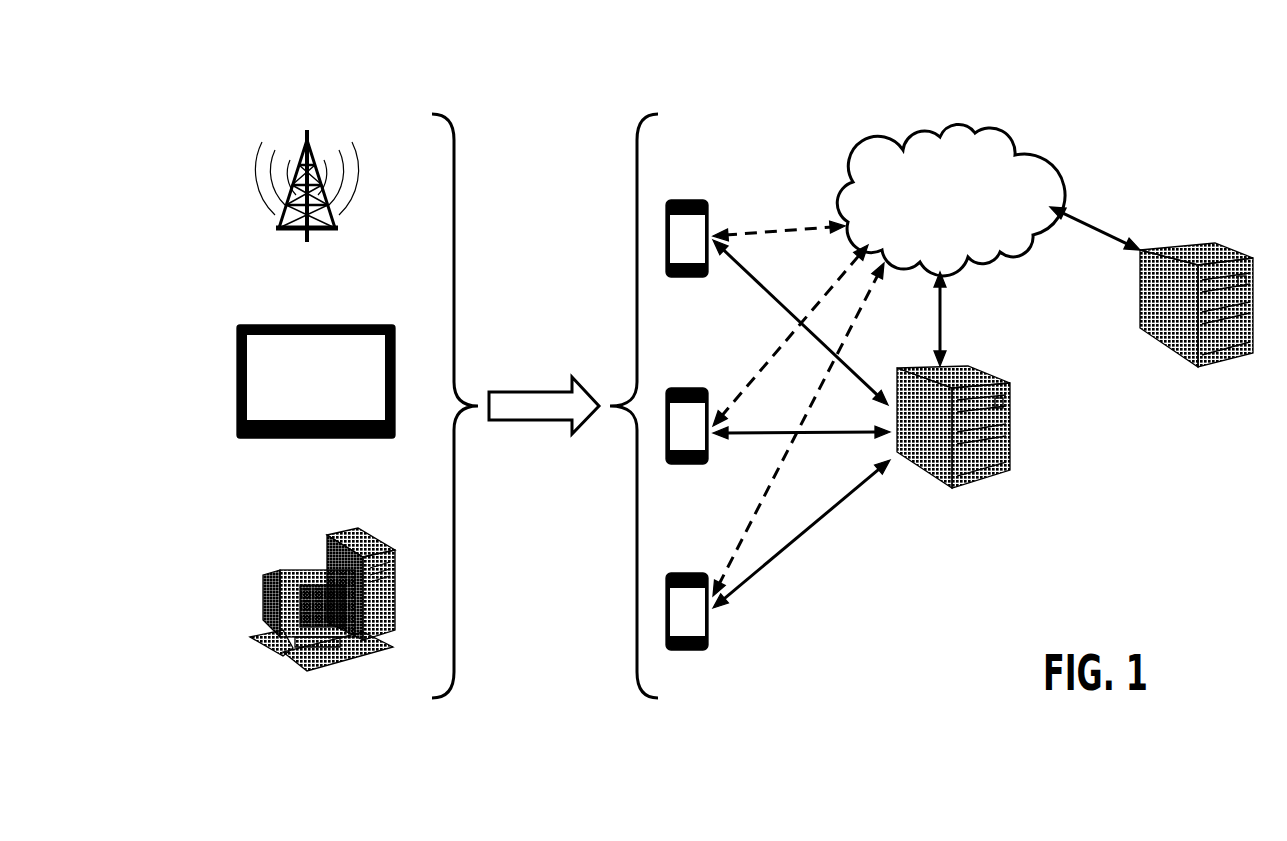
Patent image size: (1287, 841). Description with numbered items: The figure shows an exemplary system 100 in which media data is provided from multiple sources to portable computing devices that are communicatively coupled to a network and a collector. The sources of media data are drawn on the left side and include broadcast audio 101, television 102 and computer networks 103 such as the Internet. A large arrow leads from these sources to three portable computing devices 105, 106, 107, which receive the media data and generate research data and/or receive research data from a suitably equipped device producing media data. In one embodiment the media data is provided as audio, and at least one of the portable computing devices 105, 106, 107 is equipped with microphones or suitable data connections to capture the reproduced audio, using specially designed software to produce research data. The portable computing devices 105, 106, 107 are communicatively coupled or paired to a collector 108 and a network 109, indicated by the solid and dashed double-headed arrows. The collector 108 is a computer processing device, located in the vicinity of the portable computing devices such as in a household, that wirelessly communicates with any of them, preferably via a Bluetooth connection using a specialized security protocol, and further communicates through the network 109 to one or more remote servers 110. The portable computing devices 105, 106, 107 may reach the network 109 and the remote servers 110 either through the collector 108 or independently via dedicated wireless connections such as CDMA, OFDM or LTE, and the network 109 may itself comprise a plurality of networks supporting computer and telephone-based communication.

The system 100 is at (468, 61).
The broadcast audio 101 is at (306, 203).
The television 102 is at (316, 403).
The computer networks 103 is at (322, 614).
The portable computing device 105 is at (687, 260).
The portable computing device 106 is at (687, 444).
The portable computing device 107 is at (689, 630).
The collector 108 is at (953, 455).
The network 109 is at (951, 199).
The remote servers 110 is at (1196, 326).